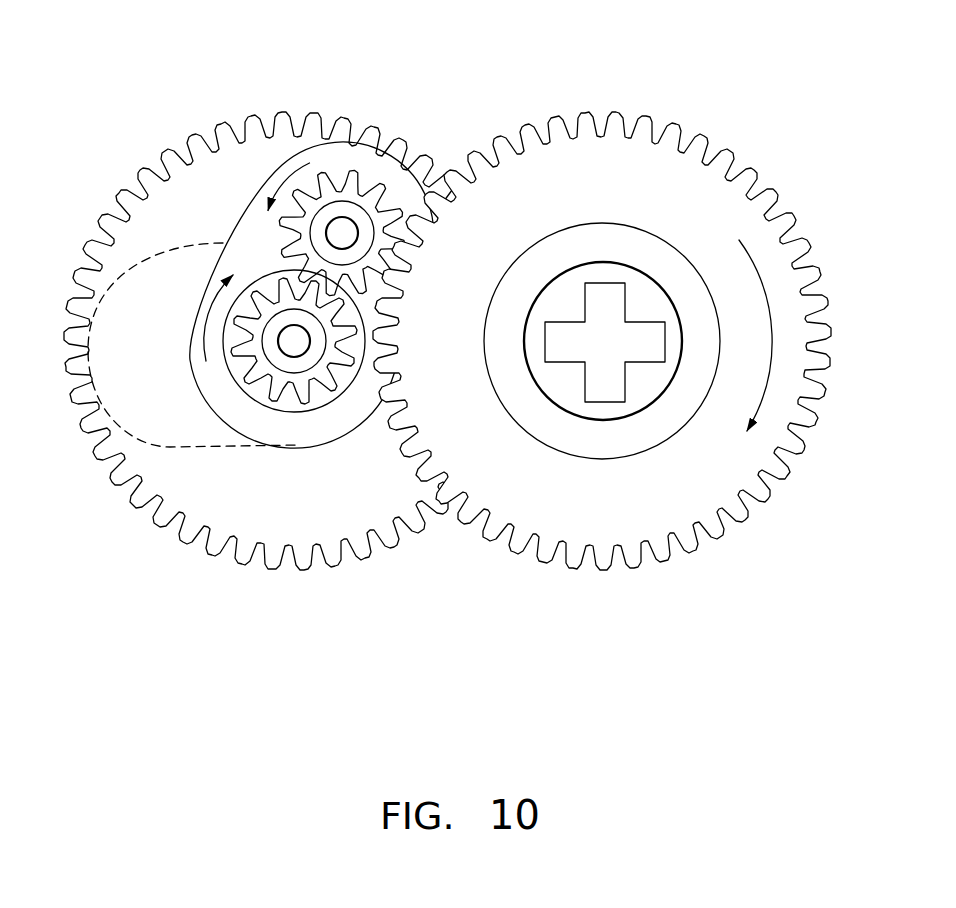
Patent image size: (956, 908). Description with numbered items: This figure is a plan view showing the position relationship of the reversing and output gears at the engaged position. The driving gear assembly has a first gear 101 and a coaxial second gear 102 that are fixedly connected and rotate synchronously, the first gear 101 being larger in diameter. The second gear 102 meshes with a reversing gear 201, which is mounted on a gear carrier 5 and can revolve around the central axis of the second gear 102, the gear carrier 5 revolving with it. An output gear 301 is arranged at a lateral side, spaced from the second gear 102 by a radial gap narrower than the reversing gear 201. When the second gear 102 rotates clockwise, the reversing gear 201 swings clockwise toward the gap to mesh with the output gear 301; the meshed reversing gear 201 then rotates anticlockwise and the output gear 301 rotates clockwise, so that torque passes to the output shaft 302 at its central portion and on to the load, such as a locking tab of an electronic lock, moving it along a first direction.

The gear carrier 5 is at (223, 240).
The first gear 101 is at (240, 473).
The second gear 102 is at (302, 380).
The reversing gear 201 is at (357, 200).
The output gear 301 is at (667, 182).
The output shaft 302 is at (640, 392).